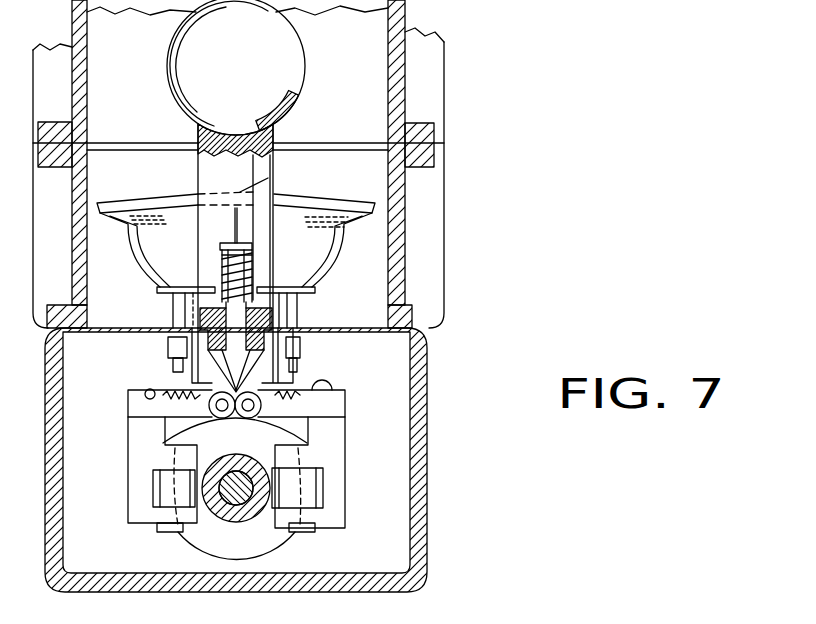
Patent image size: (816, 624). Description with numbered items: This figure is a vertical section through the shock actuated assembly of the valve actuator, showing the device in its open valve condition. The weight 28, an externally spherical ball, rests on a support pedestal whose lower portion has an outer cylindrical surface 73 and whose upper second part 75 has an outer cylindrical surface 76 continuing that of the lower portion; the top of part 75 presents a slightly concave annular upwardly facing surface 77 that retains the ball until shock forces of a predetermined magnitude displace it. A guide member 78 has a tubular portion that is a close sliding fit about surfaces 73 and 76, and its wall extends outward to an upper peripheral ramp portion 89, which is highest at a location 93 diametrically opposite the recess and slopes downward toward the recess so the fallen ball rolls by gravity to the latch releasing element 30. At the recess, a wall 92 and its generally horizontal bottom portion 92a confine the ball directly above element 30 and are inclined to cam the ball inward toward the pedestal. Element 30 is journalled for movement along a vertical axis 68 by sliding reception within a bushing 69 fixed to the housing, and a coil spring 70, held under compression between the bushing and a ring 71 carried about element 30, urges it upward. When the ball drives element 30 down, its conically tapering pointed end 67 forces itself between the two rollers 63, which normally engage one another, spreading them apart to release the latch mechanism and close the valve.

The weight 28 is at (236, 67).
The concave annular upwardly facing surface 77 is at (283, 101).
The second part 75 is at (283, 145).
The outer cylindrical surface 76 is at (196, 135).
The outer cylindrical surface 73 is at (198, 168).
The peripheral ramp portion 89 is at (150, 200).
The highest elevation location 93 is at (268, 178).
The vertical axis 68 is at (238, 224).
The guide member 78 is at (372, 197).
The ring 71 is at (252, 272).
The coil spring 70 is at (254, 285).
The latch releasing element 30 is at (221, 268).
The horizontal wall portion 92a is at (335, 288).
The wall 92 is at (172, 300).
The bushing 69 is at (265, 321).
The conically tapering pointed end 67 is at (230, 366).
The rollers 63 is at (172, 423).